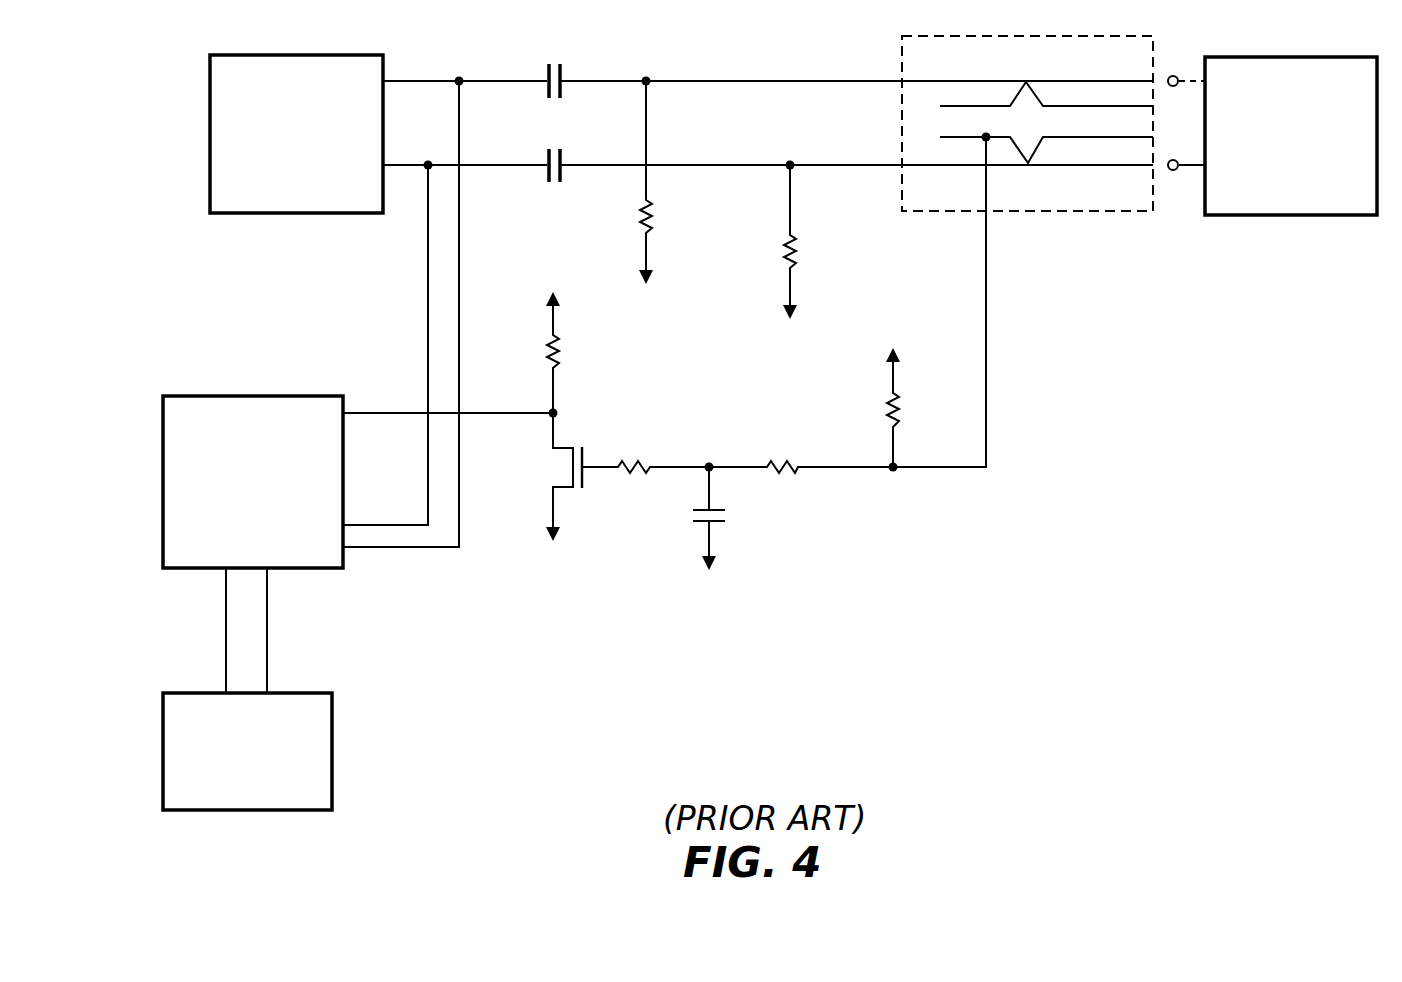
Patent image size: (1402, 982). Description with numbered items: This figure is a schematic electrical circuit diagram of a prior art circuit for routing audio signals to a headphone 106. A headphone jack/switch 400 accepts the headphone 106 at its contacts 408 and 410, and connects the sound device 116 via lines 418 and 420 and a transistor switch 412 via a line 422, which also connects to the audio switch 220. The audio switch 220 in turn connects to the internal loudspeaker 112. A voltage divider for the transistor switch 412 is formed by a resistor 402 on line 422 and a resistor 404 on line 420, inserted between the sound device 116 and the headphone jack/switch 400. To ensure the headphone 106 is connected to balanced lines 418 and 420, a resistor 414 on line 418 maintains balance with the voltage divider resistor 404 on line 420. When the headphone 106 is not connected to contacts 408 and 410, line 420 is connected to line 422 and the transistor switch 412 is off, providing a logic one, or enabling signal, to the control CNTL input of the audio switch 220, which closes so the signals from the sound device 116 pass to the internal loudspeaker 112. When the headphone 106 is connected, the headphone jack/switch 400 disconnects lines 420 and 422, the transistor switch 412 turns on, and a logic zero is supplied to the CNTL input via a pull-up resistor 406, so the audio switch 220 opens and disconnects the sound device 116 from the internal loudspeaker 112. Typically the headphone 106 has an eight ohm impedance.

The sound device 116 is at (358, 55).
The line 418 is at (846, 80).
The line 420 is at (881, 165).
The audio switch 220 is at (318, 396).
The internal loudspeaker 112 is at (333, 718).
The resistor 414 is at (652, 226).
The resistor 404 is at (796, 260).
The pull-up resistor 406 is at (560, 352).
The transistor switch 412 is at (585, 482).
The resistor 402 is at (899, 418).
The line 422 is at (988, 325).
The headphone jack/switch 400 is at (1065, 212).
The contact 410 is at (1040, 95).
The contact 408 is at (1040, 147).
The headphone 106 is at (1310, 215).